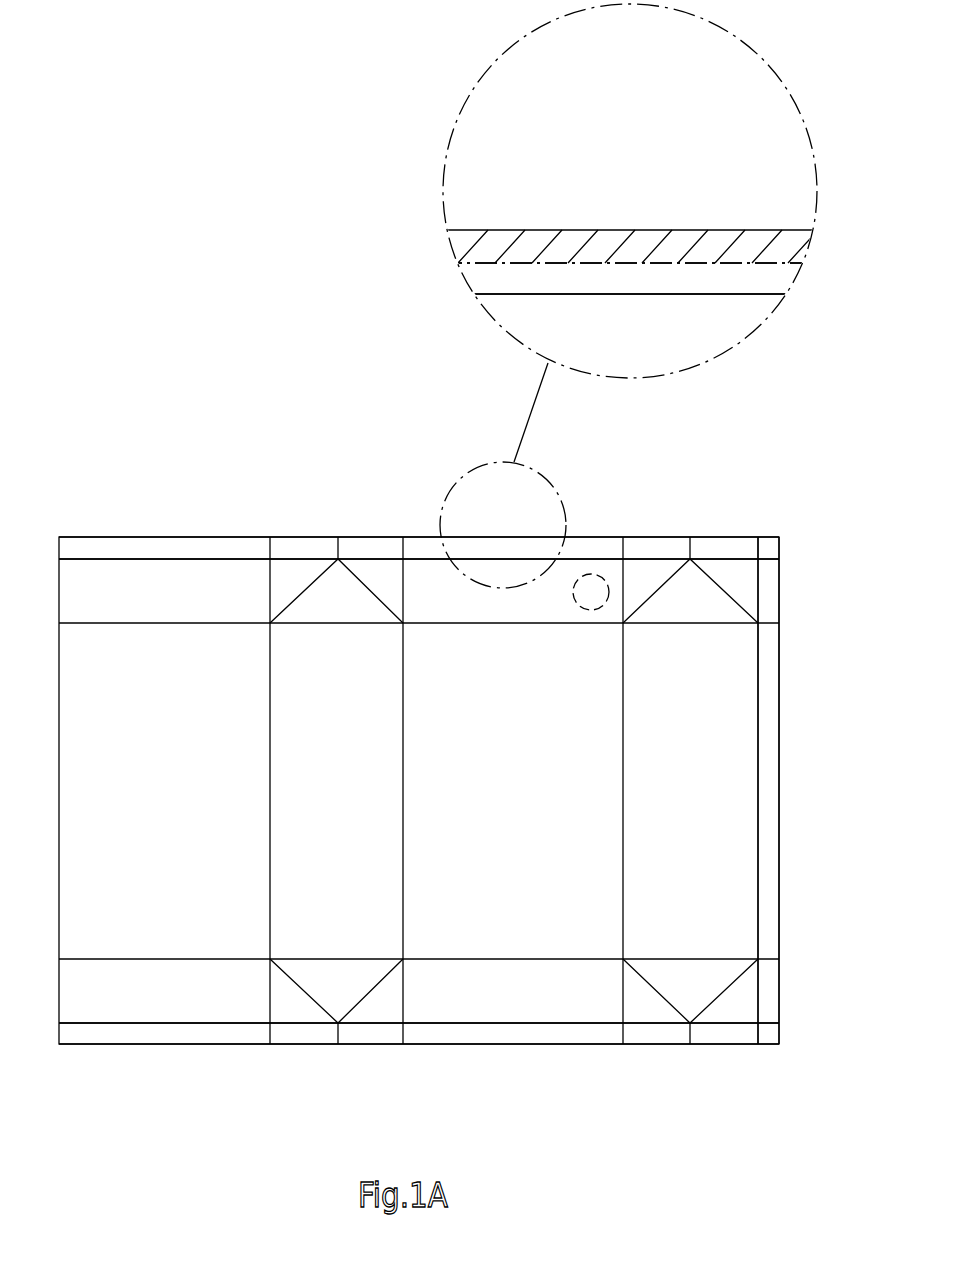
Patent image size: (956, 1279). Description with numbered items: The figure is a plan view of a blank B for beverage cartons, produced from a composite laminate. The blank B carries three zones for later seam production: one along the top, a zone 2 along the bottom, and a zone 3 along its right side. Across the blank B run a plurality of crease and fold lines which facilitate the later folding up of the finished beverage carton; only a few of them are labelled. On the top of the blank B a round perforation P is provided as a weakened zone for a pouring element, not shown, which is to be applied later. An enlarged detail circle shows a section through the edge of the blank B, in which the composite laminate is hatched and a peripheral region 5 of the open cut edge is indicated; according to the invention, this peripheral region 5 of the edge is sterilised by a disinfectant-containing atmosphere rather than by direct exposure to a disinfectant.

The zone 2 is at (141, 1033).
The zone 3 is at (772, 777).
The peripheral region 5 is at (603, 237).
The round perforation P is at (598, 575).
The blank B is at (485, 804).